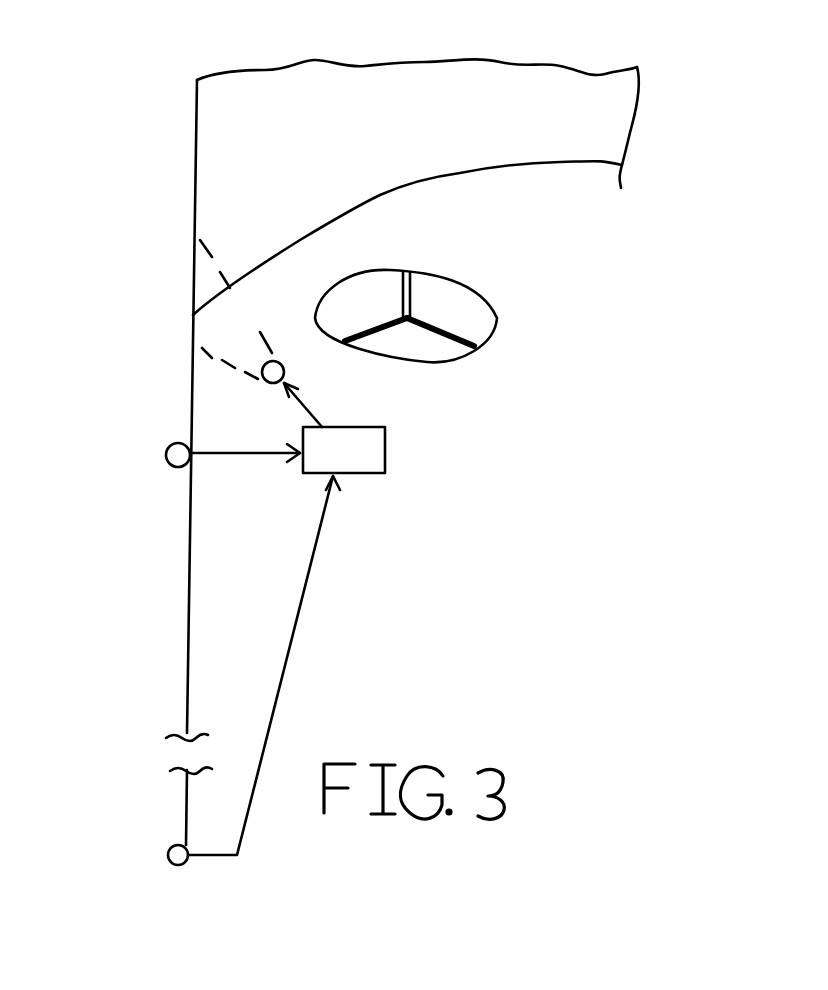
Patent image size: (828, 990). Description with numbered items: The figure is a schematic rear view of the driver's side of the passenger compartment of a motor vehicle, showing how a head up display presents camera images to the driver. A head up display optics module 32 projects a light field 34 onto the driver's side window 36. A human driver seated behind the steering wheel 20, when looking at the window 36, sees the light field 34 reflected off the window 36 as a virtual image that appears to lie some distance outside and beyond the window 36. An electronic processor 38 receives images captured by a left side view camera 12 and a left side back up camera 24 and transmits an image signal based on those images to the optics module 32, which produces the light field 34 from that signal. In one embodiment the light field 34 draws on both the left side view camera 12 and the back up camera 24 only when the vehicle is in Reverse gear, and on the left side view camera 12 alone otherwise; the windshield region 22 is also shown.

The left side view camera 12 is at (171, 467).
The steering wheel 20 is at (497, 320).
The windshield 22 is at (455, 110).
The left side back up camera 24 is at (170, 862).
The head up display optics module 32 is at (284, 369).
The light field 34 is at (252, 317).
The driver's side window 36 is at (194, 210).
The electronic processor 38 is at (385, 452).